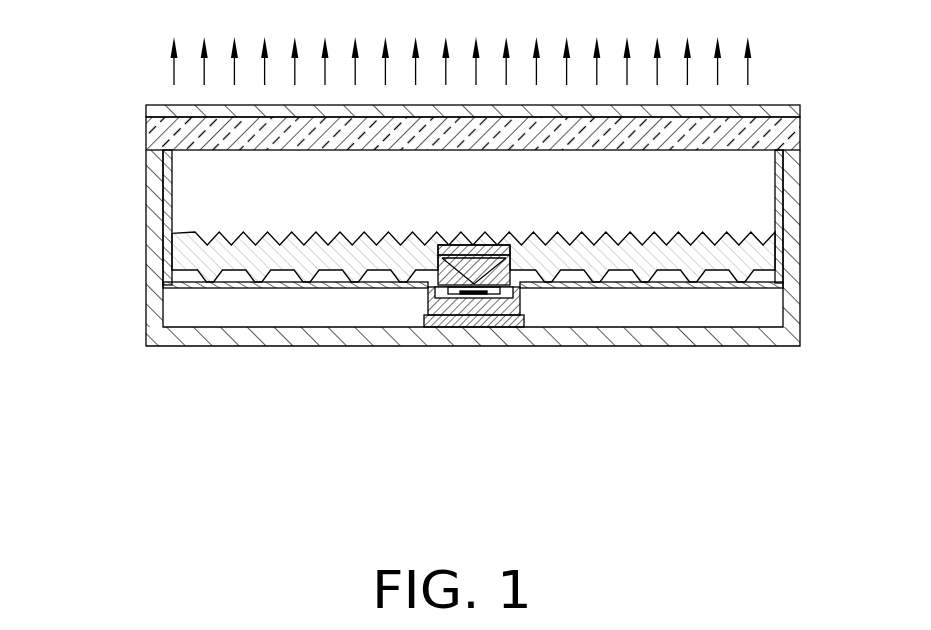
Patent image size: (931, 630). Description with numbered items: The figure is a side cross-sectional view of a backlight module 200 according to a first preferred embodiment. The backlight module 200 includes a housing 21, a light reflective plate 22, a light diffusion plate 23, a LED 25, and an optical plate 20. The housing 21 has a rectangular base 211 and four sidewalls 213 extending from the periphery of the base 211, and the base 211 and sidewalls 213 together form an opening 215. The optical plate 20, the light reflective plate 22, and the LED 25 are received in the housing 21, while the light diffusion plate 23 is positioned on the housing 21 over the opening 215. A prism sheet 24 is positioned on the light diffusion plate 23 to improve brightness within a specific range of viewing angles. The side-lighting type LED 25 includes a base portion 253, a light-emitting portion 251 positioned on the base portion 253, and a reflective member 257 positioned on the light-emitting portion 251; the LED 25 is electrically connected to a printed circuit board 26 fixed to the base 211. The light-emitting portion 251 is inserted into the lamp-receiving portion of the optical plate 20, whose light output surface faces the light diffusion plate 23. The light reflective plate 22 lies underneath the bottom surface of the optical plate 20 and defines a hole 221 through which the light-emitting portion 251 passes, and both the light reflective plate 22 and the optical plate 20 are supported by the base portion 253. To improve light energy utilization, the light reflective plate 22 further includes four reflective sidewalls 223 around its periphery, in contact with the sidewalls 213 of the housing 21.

The backlight module 200 is at (123, 70).
The prism sheet 24 is at (763, 110).
The light diffusion plate 23 is at (790, 133).
The opening 215 is at (767, 177).
The reflective sidewalls 223 is at (788, 226).
The optical plate 20 is at (740, 278).
The light reflective plate 22 is at (738, 284).
The sidewalls 213 is at (155, 218).
The housing 21 is at (457, 270).
The base 211 is at (430, 358).
The hole 221 is at (512, 270).
The light-emitting portion 251 is at (437, 272).
The base portion 253 is at (453, 308).
The reflective member 257 is at (474, 367).
The printed circuit board 26 is at (516, 300).
The LED 25 is at (436, 335).